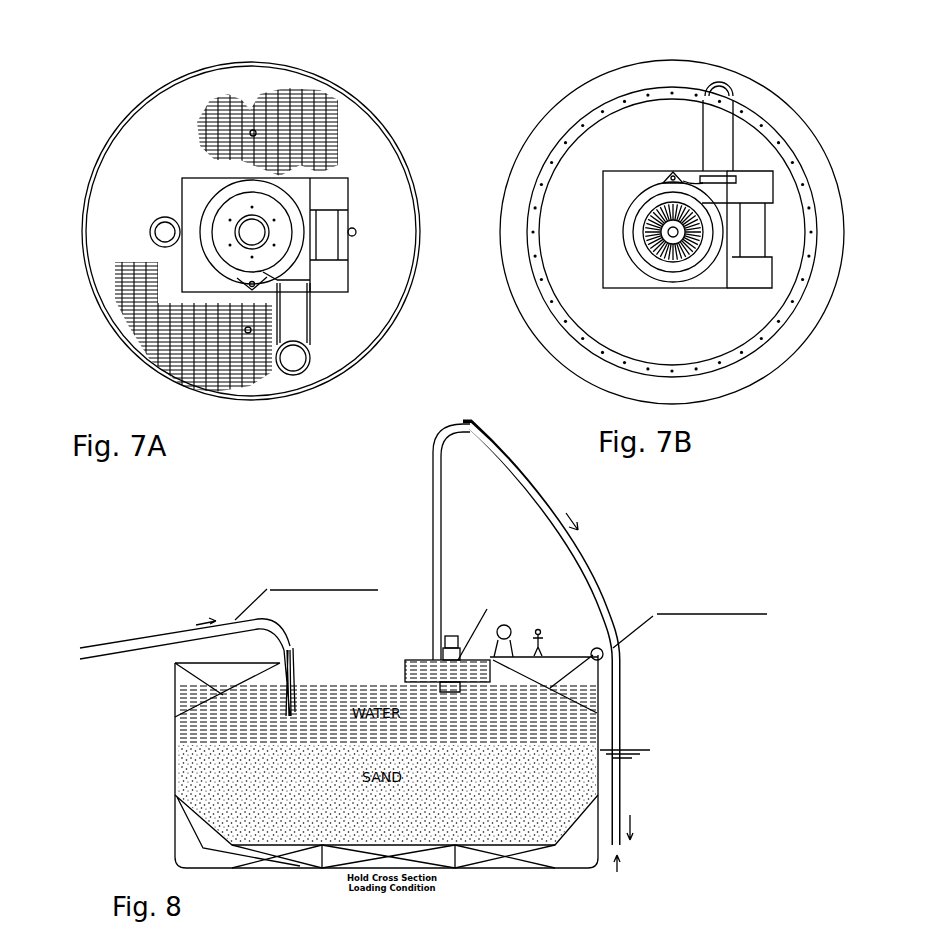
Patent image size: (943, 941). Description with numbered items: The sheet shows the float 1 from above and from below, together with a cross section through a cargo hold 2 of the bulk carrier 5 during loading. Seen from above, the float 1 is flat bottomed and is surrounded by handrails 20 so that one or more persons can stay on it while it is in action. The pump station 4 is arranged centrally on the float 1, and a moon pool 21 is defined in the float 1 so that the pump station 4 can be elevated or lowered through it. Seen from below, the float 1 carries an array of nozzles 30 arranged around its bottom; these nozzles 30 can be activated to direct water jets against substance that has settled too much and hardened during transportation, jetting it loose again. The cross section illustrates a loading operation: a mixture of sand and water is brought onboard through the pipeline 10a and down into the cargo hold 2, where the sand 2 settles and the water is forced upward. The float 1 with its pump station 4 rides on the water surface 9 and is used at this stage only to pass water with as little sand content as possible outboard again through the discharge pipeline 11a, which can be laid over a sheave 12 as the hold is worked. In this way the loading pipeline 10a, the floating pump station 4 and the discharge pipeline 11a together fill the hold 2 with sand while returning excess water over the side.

In FIG. 7A, the float 1 is at (262, 84).
In FIG. 7B, the float 1 is at (768, 103).
In FIG. 8, the float 1 is at (406, 660).
In FIG. 8, the cargo hold 2 is at (441, 806).
In FIG. 7A, the pump station 4 is at (206, 212).
In FIG. 7B, the pump station 4 is at (710, 277).
In FIG. 8, the pump station 4 is at (452, 636).
In FIG. 8, the bulk carrier 5 is at (174, 698).
In FIG. 8, the water surface 9 is at (341, 687).
In FIG. 8, the pipeline 10a is at (168, 640).
In FIG. 8, the discharge pipeline 11a is at (588, 563).
In FIG. 8, the sheave 12 is at (511, 632).
In FIG. 7A, the handrail 20 is at (368, 105).
In FIG. 7A, the moon pool 21 is at (197, 192).
In FIG. 7B, the moon pool 21 is at (622, 183).
In FIG. 7B, the nozzle 30 is at (537, 283).